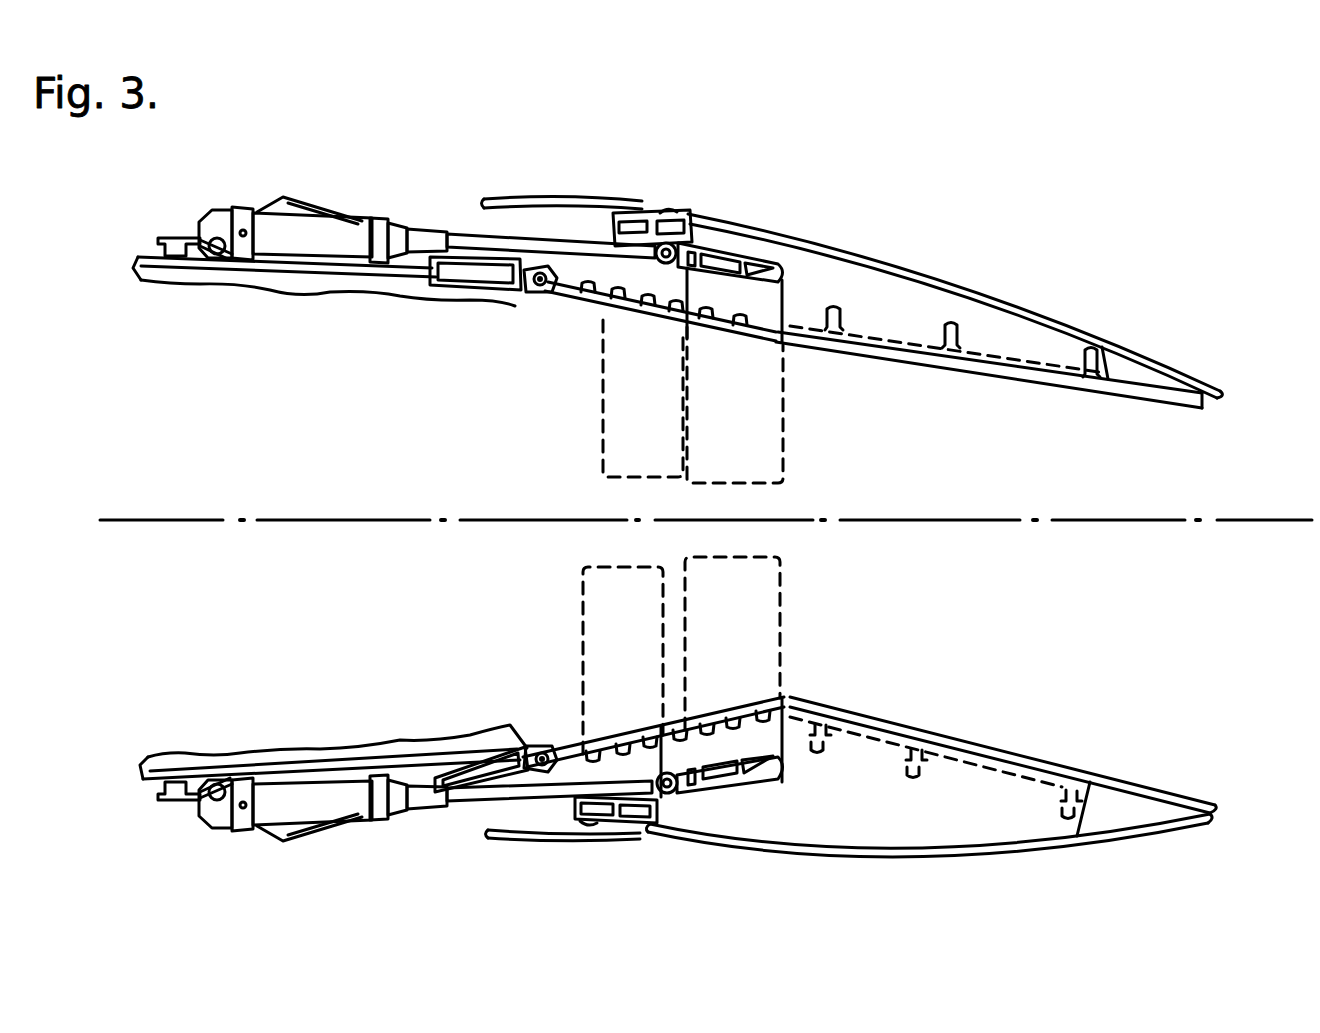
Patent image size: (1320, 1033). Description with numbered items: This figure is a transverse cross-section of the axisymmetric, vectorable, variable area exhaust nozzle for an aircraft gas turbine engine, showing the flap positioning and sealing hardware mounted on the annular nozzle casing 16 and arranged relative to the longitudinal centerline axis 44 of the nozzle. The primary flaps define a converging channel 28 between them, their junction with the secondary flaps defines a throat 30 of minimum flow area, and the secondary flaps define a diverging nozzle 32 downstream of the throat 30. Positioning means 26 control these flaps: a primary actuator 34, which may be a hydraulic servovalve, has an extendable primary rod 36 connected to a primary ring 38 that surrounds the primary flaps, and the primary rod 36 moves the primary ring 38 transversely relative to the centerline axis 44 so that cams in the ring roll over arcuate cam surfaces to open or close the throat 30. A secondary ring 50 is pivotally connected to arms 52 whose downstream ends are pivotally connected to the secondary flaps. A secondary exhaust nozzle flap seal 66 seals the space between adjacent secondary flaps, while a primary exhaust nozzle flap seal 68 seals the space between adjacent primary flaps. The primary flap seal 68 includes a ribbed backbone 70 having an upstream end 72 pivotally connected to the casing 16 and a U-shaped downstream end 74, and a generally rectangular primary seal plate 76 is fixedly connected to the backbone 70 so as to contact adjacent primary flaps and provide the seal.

The annular nozzle casing 16 is at (148, 257).
The positioning means 26 is at (555, 238).
The converging channel 28 is at (658, 552).
The throat 30 is at (767, 688).
The diverging nozzle 32 is at (1103, 613).
The primary actuator 34 is at (330, 243).
The primary rod 36 is at (517, 237).
The primary ring 38 is at (783, 265).
The longitudinal centerline axis 44 is at (337, 520).
The secondary ring 50 is at (668, 212).
The arm 52 is at (1010, 300).
The secondary exhaust nozzle flap seal 66 is at (1018, 388).
The primary exhaust nozzle flap seal 68 is at (650, 317).
The ribbed backbone 70 is at (657, 304).
The upstream end of backbone 72 is at (542, 290).
The downstream end of backbone 74 is at (750, 320).
The primary seal plate 76 is at (587, 293).